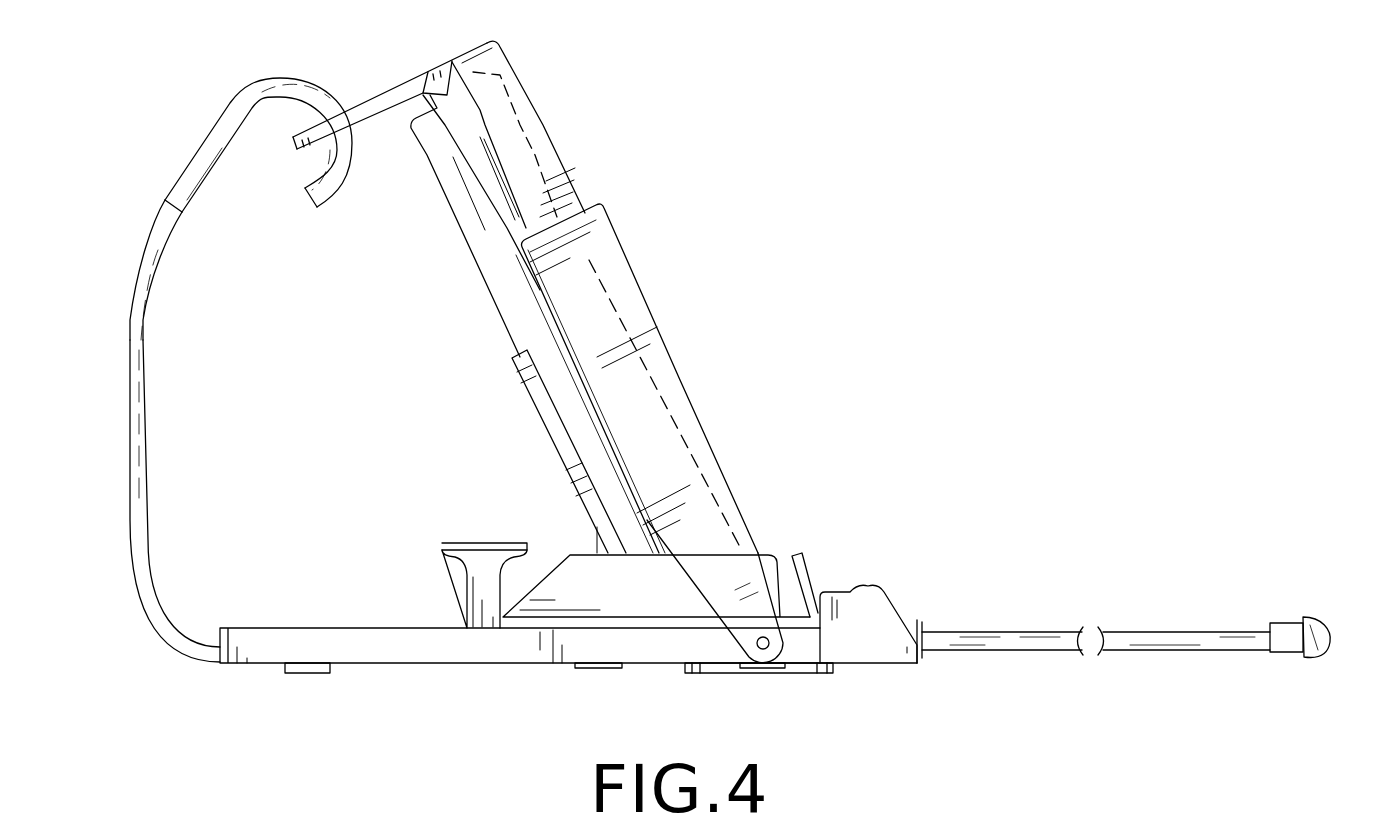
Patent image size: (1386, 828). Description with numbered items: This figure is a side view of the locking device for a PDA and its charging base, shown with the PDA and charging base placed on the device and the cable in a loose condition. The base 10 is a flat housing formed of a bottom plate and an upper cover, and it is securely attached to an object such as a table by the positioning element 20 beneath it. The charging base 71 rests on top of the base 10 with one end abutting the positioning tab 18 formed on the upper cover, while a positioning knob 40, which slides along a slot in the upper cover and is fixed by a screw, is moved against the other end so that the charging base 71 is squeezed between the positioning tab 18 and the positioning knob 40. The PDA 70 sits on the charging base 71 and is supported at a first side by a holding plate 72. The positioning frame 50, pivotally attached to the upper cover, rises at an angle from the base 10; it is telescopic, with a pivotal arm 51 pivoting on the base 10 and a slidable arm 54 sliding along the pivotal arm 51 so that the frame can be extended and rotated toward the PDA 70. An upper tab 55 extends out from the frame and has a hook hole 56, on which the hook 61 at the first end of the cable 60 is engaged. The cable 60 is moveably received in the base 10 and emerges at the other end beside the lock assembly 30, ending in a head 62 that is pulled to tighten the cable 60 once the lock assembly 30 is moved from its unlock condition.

The base 10 is at (355, 594).
The positioning tab 18 is at (800, 561).
The positioning element 20 is at (807, 670).
The lock assembly 30 is at (912, 578).
The positioning knob 40 is at (438, 540).
The positioning frame 50 is at (660, 216).
The pivotal arm 51 is at (646, 310).
The slidable arm 54 is at (543, 135).
The upper tab 55 is at (398, 90).
The hook hole 56 is at (340, 108).
The cable 60 is at (143, 410).
The hook 61 is at (223, 127).
The head 62 is at (1318, 647).
The PDA 70 is at (468, 215).
The charging base 71 is at (587, 562).
The holding plate 72 is at (548, 417).